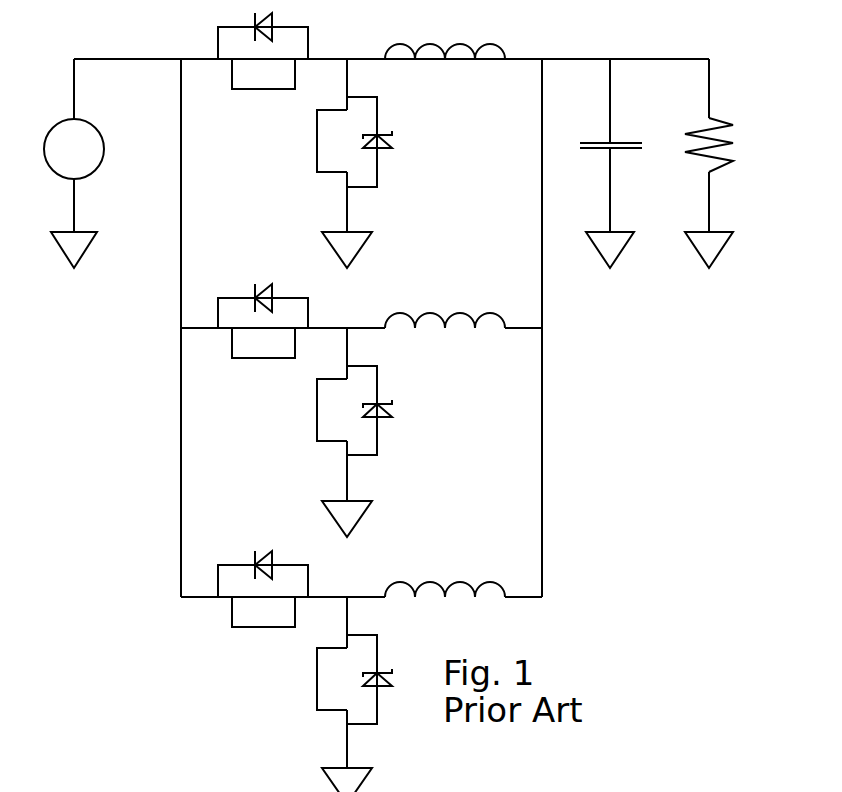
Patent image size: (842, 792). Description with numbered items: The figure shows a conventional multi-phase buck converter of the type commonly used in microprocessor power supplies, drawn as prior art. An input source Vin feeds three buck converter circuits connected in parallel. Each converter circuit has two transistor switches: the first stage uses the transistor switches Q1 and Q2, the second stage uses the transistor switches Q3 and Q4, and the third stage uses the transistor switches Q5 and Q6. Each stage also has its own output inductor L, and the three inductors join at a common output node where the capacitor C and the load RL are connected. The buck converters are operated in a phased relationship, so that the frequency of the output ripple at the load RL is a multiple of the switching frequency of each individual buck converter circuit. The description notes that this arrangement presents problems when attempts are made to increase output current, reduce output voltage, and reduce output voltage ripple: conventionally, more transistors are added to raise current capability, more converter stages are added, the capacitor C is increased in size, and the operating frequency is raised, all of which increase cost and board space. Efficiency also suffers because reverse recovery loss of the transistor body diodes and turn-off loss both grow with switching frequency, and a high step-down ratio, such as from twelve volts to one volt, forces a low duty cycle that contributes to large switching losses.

The input voltage source Vin is at (74, 163).
The transistor switch Q1 is at (263, 51).
The transistor switch Q2 is at (354, 163).
The high-side switch transistor (phase 2) Q3 is at (263, 321).
The low-side switch transistor (phase 2) Q4 is at (354, 432).
The high-side switch transistor (phase 3) Q5 is at (263, 589).
The low-side switch transistor (phase 3) Q6 is at (354, 694).
The output inductor L is at (445, 301).
The capacitor C is at (614, 163).
The load RL is at (727, 163).